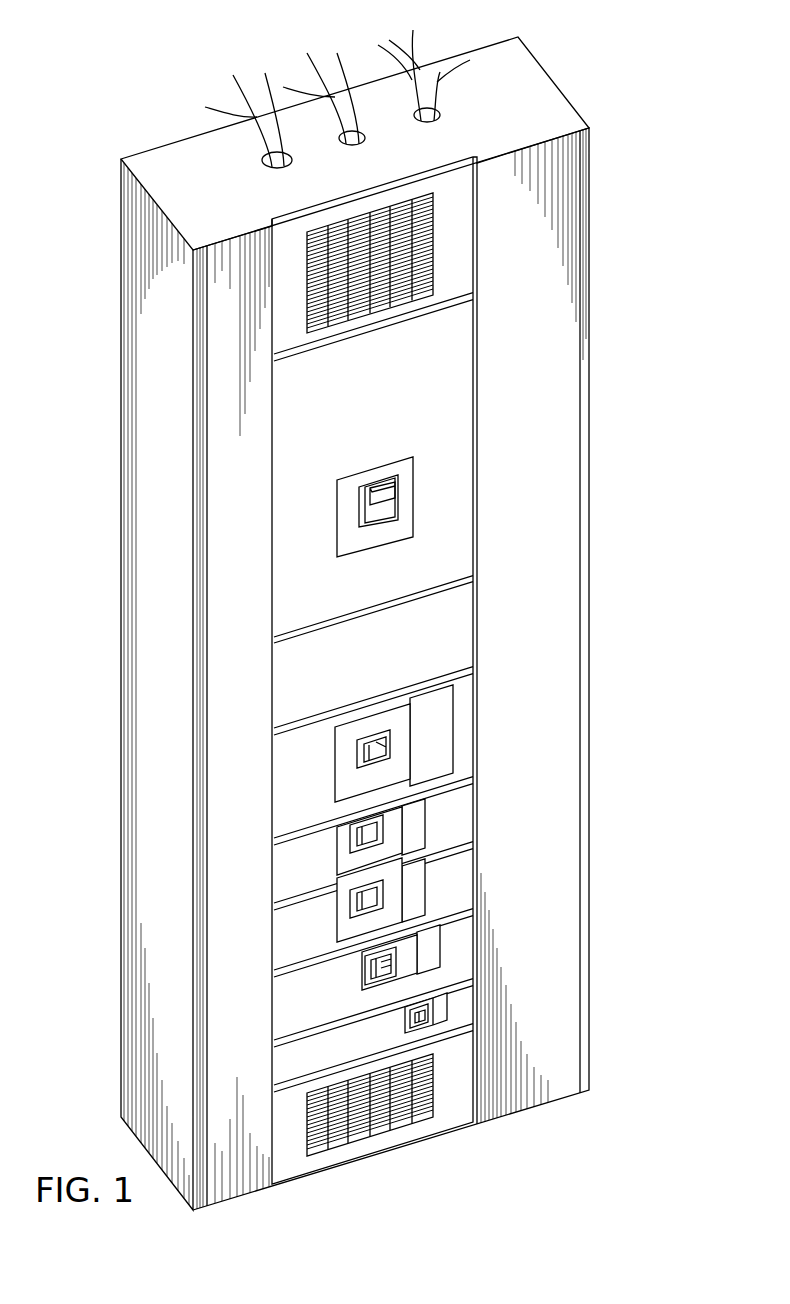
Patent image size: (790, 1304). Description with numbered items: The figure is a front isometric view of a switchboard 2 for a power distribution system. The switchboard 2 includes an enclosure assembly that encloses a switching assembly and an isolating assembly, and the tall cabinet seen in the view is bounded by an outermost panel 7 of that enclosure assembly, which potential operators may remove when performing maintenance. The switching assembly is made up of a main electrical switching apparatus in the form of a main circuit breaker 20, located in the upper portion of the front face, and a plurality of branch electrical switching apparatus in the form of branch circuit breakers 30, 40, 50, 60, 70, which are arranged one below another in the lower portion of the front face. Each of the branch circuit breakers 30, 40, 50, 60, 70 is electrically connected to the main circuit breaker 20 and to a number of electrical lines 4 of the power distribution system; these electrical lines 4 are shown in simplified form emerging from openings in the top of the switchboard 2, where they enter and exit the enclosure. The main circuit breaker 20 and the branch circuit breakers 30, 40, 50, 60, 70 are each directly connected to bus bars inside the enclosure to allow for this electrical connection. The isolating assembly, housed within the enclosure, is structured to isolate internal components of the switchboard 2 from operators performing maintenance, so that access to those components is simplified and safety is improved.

The switchboard 2 is at (618, 150).
The electrical lines 4 is at (232, 101).
The outermost panel 7 is at (550, 568).
The main circuit breaker 20 is at (353, 517).
The branch circuit breaker 30 is at (352, 762).
The branch circuit breaker 40 is at (347, 842).
The branch circuit breaker 50 is at (347, 908).
The branch circuit breaker 60 is at (358, 973).
The branch circuit breaker 70 is at (442, 1010).